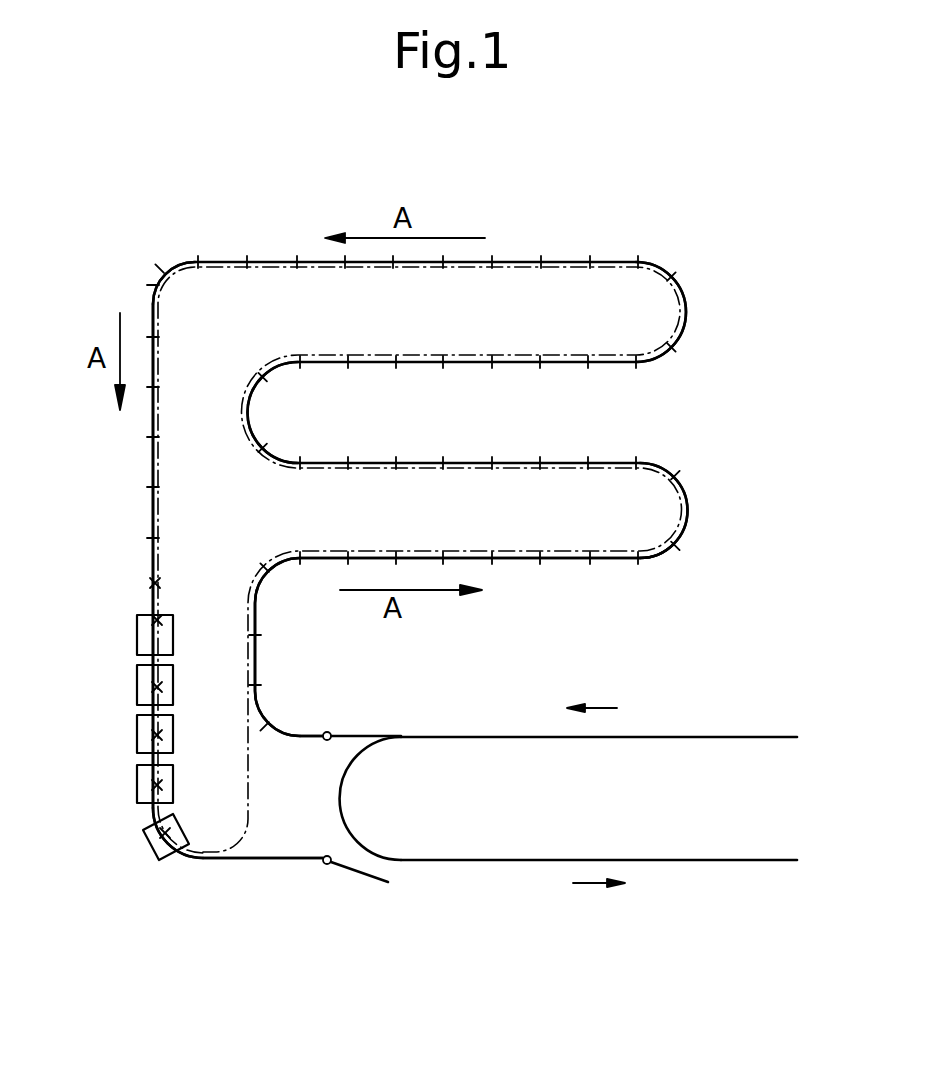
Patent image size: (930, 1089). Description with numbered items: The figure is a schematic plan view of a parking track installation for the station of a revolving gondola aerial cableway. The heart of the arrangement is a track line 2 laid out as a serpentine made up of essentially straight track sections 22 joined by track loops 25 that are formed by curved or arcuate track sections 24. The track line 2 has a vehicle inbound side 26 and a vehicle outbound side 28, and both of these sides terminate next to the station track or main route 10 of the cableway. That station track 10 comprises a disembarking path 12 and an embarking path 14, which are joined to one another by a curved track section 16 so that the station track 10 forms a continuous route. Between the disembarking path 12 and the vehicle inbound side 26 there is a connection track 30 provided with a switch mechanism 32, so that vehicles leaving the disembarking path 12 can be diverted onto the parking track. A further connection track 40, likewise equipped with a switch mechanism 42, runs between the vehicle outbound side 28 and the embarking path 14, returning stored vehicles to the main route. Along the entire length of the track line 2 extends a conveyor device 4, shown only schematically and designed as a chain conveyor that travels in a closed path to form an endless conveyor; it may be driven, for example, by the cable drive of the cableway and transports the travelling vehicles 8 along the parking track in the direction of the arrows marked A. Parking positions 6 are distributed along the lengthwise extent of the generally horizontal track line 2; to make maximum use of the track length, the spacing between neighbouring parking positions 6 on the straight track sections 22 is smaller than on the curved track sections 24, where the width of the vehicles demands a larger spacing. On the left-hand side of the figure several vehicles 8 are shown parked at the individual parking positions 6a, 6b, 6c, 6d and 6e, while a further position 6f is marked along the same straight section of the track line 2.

The track line 2 is at (712, 315).
The conveyor device 4 is at (625, 352).
The parking positions 6 is at (443, 462).
The parking position 6a is at (150, 825).
The parking position 6b is at (160, 785).
The parking position 6c is at (157, 735).
The parking position 6d is at (157, 687).
The parking position 6e is at (160, 620).
The conveyor track station f 6f is at (155, 583).
The vehicles 8 is at (137, 630).
The station track 10 is at (505, 890).
The disembarking path 12 is at (680, 737).
The embarking path 14 is at (710, 862).
The curved track section 16 is at (342, 793).
The straight track sections 22 is at (153, 555).
The curved track sections 24 is at (165, 264).
The track loops 25 is at (680, 562).
The vehicle inbound side 26 is at (258, 650).
The vehicle outbound side 28 is at (178, 865).
The connection track 30 is at (297, 738).
The switch mechanism 32 is at (346, 735).
The connection track 40 is at (270, 862).
The switch mechanism 42 is at (355, 872).